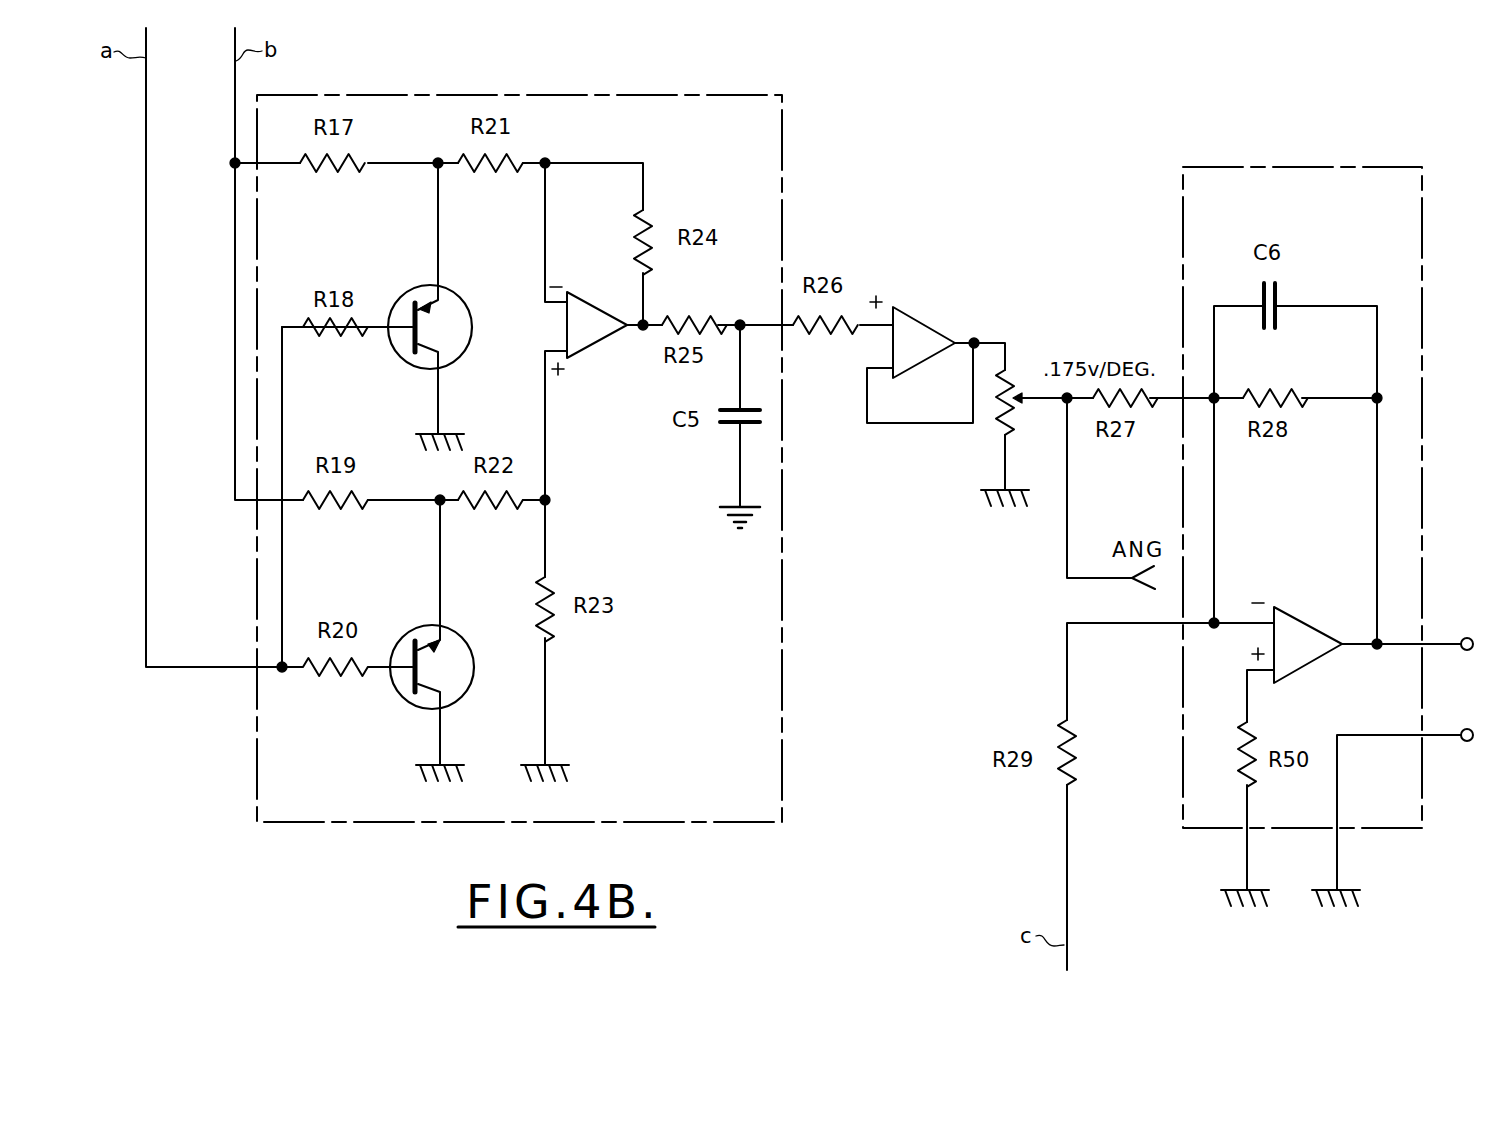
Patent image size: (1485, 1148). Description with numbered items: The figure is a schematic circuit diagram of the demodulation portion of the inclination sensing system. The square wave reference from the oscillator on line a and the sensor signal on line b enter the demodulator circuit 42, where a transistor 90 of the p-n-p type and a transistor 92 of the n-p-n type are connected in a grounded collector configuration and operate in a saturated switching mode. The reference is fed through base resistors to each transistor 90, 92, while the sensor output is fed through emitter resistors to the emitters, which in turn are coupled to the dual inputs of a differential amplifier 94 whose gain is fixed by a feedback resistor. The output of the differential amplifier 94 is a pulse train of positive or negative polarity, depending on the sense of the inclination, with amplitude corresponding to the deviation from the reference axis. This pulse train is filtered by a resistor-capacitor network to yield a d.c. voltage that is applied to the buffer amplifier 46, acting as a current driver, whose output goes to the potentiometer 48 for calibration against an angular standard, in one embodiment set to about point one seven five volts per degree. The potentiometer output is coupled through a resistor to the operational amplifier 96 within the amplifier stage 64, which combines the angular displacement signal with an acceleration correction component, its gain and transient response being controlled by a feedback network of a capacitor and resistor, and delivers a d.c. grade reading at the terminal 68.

The demodulator circuit 42 is at (552, 95).
The buffer amplifier 46 is at (926, 326).
The potentiometer 48 is at (1025, 370).
The amplifier 64 is at (1285, 167).
The terminal 68 is at (1476, 699).
The transistor 90 is at (458, 290).
The transistor 92 is at (420, 628).
The differential amplifier 94 is at (590, 302).
The operational amplifier 96 is at (1304, 618).